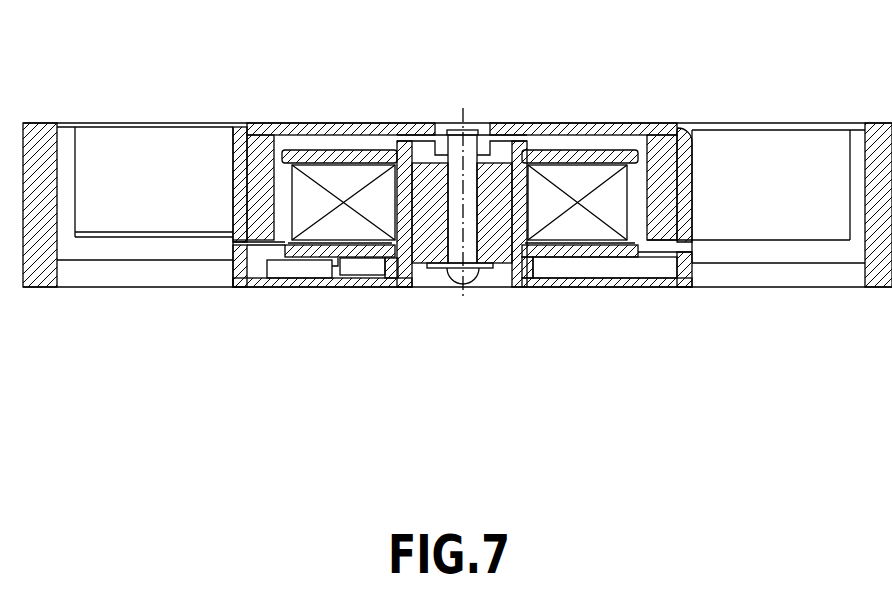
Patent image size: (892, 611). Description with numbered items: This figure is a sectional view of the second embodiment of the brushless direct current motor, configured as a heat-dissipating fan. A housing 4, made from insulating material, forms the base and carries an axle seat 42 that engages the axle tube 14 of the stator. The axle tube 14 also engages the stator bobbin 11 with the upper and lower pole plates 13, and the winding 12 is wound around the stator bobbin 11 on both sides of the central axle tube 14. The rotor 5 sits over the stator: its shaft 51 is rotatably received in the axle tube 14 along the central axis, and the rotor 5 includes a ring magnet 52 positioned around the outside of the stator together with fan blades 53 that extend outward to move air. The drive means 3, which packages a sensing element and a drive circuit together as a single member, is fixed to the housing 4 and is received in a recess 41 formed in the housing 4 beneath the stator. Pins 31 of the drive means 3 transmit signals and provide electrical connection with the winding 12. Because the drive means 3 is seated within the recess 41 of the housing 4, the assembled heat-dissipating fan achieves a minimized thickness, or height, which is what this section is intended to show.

The drive means 3 is at (307, 287).
The housing 4 is at (668, 287).
The rotor 5 is at (657, 130).
The stator bobbin 11 is at (572, 150).
The winding 12 is at (583, 227).
The upper and lower pole plates 13 is at (370, 150).
The axle tube 14 is at (410, 287).
The pins 31 is at (355, 278).
The recess 41 is at (272, 287).
The axle seat 42 is at (535, 262).
The shaft 51 is at (473, 287).
The ring magnet 52 is at (670, 132).
The fan blades 53 is at (775, 145).